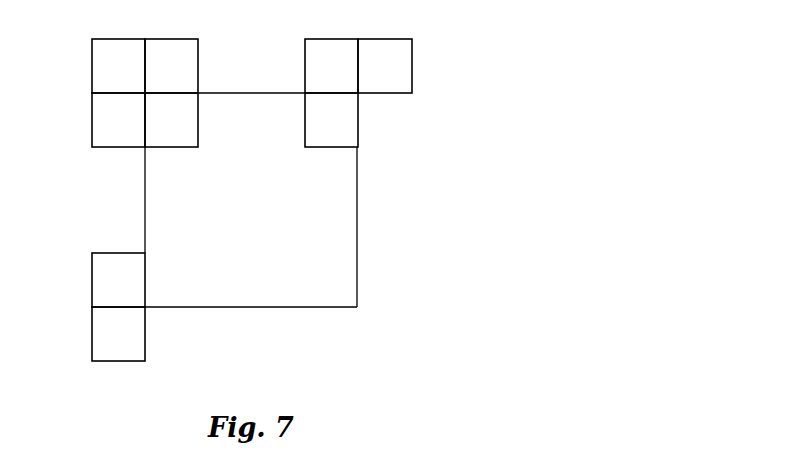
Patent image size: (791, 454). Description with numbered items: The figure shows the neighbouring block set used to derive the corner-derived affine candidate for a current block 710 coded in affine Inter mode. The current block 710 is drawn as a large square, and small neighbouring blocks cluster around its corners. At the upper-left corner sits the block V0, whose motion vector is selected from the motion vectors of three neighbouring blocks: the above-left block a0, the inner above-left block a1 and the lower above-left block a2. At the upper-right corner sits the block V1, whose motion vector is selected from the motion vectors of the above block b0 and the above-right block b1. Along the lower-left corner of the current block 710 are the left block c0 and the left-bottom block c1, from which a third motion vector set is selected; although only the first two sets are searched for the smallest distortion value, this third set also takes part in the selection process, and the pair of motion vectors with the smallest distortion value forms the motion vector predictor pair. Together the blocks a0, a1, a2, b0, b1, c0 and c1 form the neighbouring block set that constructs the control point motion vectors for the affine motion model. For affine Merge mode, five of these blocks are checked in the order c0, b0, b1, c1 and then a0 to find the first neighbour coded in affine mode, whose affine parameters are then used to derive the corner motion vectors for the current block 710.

The current block 710 is at (357, 216).
The above-left block a0 is at (118, 66).
The inner above-left block a1 is at (171, 66).
The lower above-left block a2 is at (118, 120).
The block at the upper-left corner V0 is at (171, 120).
The above block b0 is at (331, 66).
The above-right block b1 is at (385, 66).
The block at the upper-right corner V1 is at (331, 120).
The left block c0 is at (118, 280).
The left-bottom block c1 is at (118, 334).